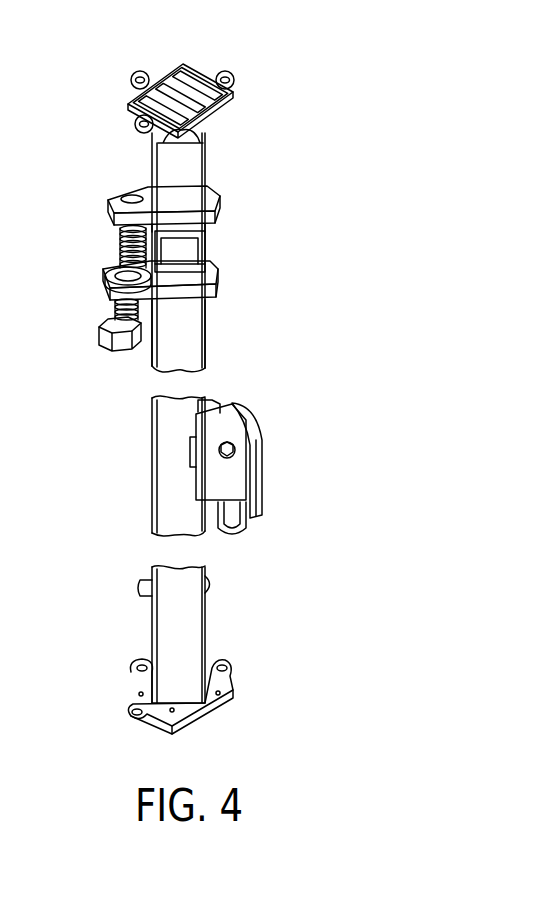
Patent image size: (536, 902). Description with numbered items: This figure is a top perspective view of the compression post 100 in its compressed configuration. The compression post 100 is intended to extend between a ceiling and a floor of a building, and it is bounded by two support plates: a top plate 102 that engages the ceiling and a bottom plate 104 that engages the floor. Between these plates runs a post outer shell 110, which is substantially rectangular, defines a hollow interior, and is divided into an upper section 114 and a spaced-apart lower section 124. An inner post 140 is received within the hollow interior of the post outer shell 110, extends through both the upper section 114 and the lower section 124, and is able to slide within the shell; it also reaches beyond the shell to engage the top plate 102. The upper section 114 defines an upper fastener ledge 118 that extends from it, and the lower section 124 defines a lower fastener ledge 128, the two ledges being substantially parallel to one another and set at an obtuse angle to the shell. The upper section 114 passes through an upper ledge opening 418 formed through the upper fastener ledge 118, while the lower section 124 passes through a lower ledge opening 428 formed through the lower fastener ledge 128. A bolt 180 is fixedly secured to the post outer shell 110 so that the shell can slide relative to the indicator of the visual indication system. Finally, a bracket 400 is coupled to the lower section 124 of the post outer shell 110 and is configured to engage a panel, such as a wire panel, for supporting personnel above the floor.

The compression post 100 is at (340, 223).
The top plate 102 is at (146, 70).
The bottom plate 104 is at (135, 695).
The post outer shell 110 is at (210, 338).
The upper section 114 is at (187, 175).
The upper fastener ledge 118 is at (128, 204).
The lower section 124 is at (185, 632).
The lower fastener ledge 128 is at (212, 271).
The inner post 140 is at (210, 243).
The bolt 180 is at (212, 589).
The bracket 400 is at (260, 428).
The upper ledge opening 418 is at (200, 198).
The lower ledge opening 428 is at (180, 281).